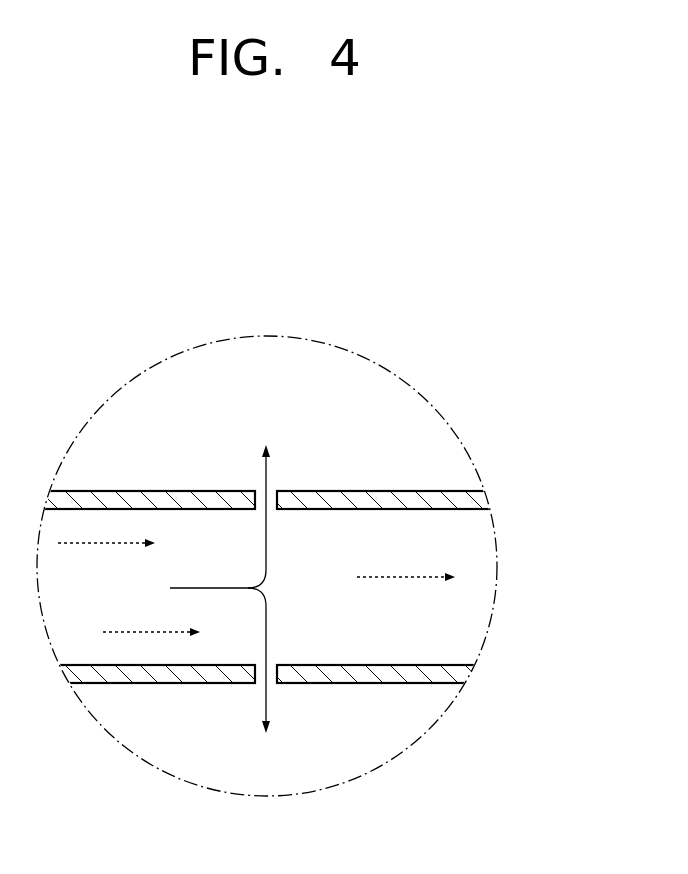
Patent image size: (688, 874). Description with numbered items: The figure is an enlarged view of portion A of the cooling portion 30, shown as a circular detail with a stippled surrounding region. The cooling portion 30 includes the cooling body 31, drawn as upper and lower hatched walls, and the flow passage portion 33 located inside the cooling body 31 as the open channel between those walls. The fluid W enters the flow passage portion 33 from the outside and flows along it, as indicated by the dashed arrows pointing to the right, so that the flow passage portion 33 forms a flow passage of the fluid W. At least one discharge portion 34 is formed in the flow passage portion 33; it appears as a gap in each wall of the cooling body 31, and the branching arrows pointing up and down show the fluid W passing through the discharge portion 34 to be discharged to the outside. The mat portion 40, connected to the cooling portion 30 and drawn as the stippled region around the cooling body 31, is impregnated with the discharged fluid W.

The cooling portion 30 is at (313, 584).
The cooling body 31 is at (475, 500).
The flow passage portion 33 is at (290, 647).
The discharge portion 34 is at (275, 670).
The mat portion 40 is at (180, 750).
The portion A is at (415, 393).
The fluid W is at (390, 579).